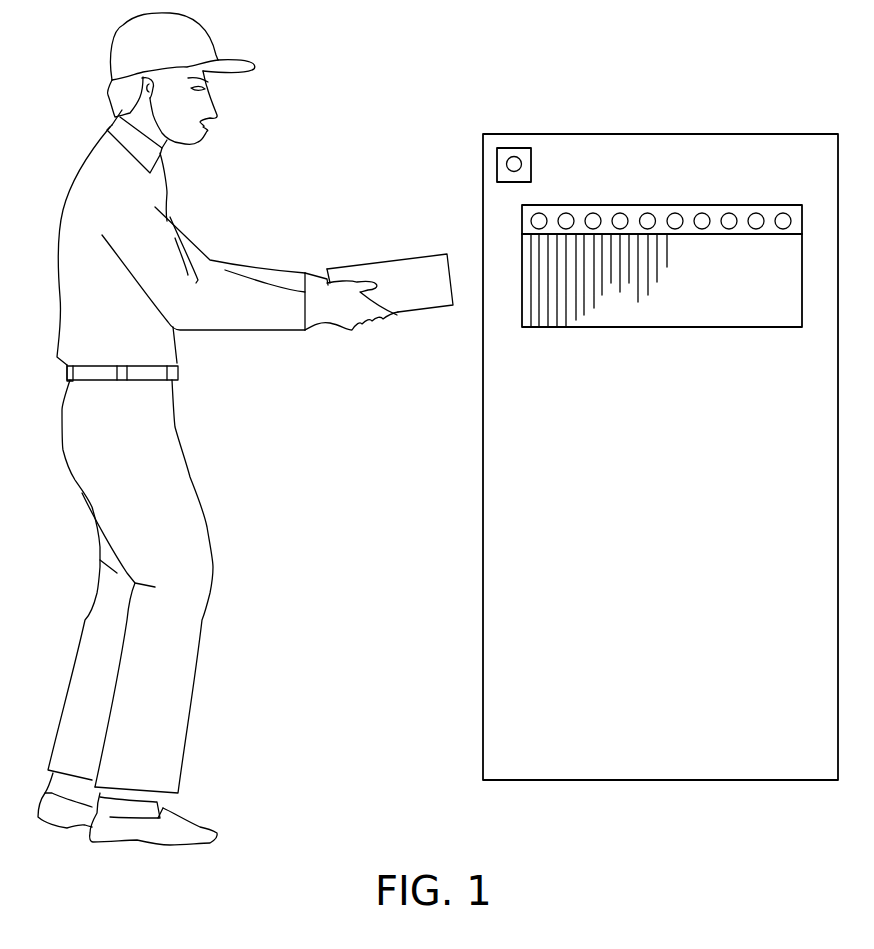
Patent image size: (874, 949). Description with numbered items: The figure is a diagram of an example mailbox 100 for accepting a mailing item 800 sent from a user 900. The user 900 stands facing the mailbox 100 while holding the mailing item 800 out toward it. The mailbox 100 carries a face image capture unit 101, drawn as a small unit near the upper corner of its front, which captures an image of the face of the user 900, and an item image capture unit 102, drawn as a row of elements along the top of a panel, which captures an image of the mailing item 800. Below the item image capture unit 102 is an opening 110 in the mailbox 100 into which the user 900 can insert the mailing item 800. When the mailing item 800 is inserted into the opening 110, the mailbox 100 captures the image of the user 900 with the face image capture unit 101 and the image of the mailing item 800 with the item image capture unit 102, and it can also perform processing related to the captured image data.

The user 900 is at (93, 183).
The mailing item 800 is at (397, 270).
The mailbox 100 is at (679, 603).
The face image capture unit 101 is at (513, 148).
The item image capture unit 102 is at (658, 212).
The opening 110 is at (635, 327).